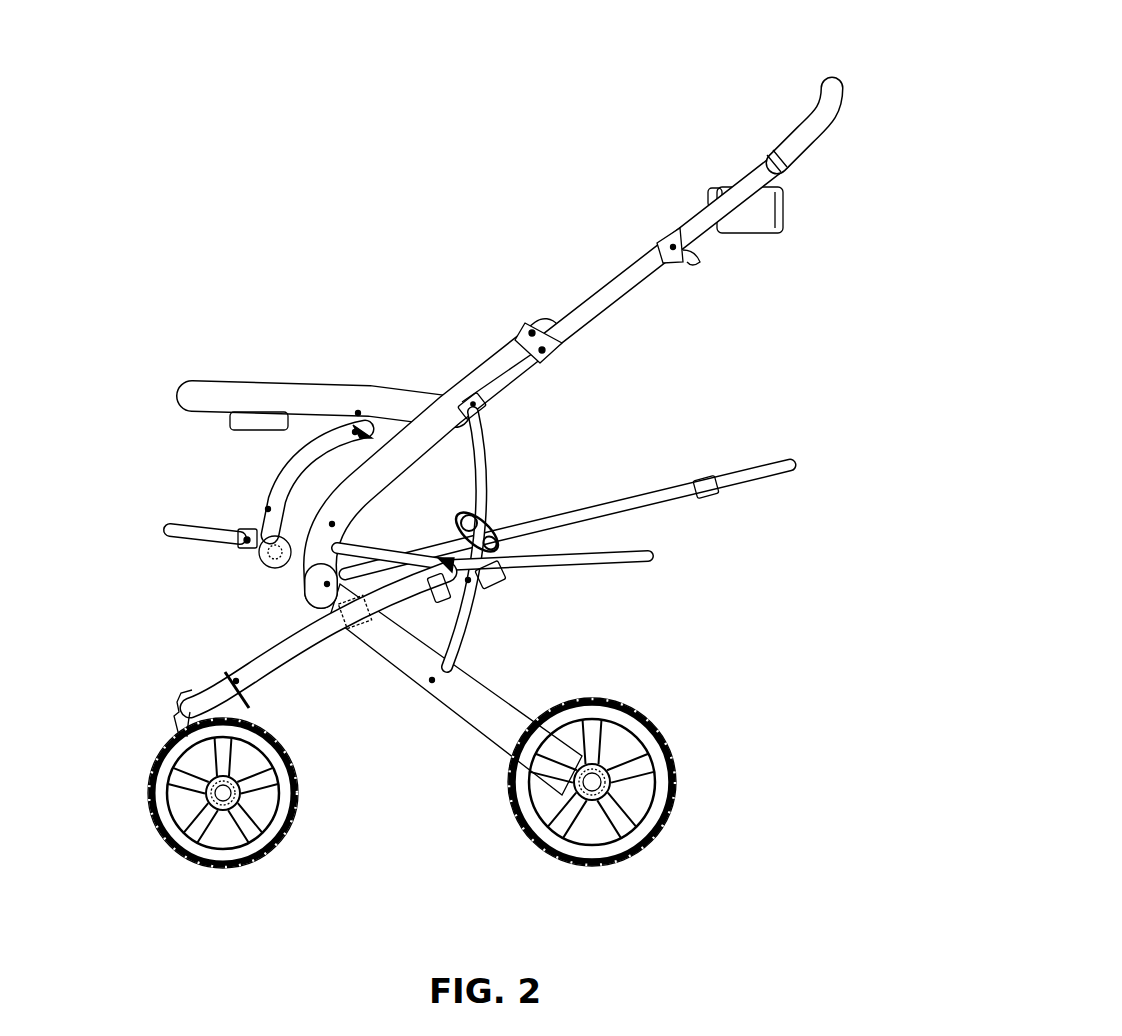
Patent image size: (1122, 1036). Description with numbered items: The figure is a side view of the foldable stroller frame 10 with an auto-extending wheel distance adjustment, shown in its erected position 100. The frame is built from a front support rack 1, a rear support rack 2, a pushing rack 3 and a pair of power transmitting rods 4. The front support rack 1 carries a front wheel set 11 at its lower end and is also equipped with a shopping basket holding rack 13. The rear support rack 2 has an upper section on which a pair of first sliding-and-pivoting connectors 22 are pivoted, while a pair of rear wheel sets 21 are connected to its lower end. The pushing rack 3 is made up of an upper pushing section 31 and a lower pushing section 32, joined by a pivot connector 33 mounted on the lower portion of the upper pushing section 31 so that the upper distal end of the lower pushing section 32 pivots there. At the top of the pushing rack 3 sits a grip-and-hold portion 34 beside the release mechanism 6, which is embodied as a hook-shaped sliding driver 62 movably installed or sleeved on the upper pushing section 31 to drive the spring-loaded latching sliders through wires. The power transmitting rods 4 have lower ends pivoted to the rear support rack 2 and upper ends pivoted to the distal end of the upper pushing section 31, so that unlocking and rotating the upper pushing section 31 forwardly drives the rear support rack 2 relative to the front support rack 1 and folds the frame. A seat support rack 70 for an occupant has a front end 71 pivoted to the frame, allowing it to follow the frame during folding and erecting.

The erected position 100 is at (366, 286).
The front support rack 1 is at (260, 658).
The front wheel set 11 is at (148, 773).
The rear support rack 2 is at (438, 698).
The rear wheel sets 21 is at (672, 776).
The first sliding-and-pivoting connectors 22 is at (345, 625).
The pushing rack 3 is at (543, 298).
The upper pushing section 31 is at (614, 300).
The lower pushing section 32 is at (504, 565).
The pivot connector 33 is at (548, 365).
The grip-and-hold portion 34 is at (833, 72).
The power transmitting rods 4 is at (470, 613).
The release mechanism 6 is at (737, 258).
The hook-shaped sliding driver 62 is at (690, 262).
The foldable stroller frame 10 is at (704, 412).
The shopping basket holding rack 13 is at (592, 566).
The seat support rack 70 is at (416, 558).
The front end 71 is at (288, 542).